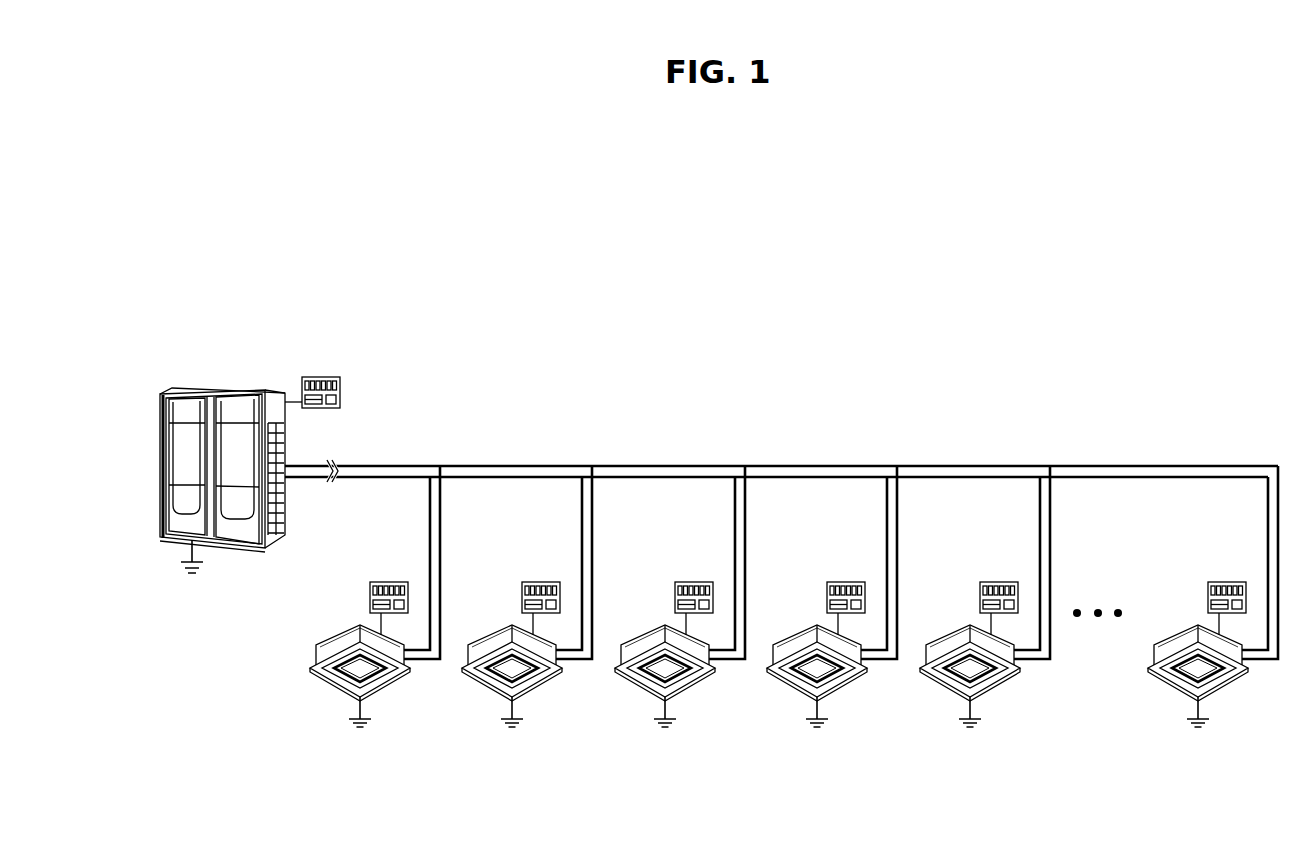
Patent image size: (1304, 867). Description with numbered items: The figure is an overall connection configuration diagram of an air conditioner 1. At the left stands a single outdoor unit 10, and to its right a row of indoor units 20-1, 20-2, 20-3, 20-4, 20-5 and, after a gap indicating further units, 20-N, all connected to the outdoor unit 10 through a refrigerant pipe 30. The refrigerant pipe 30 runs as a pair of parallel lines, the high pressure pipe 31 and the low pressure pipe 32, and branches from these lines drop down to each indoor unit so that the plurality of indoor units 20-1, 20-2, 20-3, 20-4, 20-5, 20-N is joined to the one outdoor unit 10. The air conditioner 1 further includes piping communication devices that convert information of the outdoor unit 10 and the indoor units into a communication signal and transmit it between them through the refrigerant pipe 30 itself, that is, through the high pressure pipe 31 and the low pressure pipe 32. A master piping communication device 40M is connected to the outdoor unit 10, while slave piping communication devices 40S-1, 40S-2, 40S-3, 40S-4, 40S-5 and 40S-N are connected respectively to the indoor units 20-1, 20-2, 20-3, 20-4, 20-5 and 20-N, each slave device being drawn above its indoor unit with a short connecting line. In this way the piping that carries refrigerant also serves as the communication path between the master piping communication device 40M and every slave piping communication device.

The air conditioner 1 is at (670, 304).
The outdoor unit 10 is at (162, 392).
The indoor unit 20-1 is at (342, 632).
The indoor unit 20-2 is at (494, 632).
The indoor unit 20-3 is at (647, 632).
The indoor unit 20-4 is at (799, 632).
The indoor unit 20-5 is at (952, 632).
The indoor unit 20-N is at (1180, 632).
The refrigerant pipe 30 is at (417, 421).
The high pressure pipe 31 is at (361, 465).
The low pressure pipe 32 is at (394, 476).
The master piping communication device 40M is at (321, 376).
The slave piping communication device 40S-1 is at (377, 580).
The slave piping communication device 40S-2 is at (529, 580).
The slave piping communication device 40S-3 is at (682, 580).
The slave piping communication device 40S-4 is at (834, 580).
The slave piping communication device 40S-5 is at (987, 580).
The slave piping communication device 40S-N is at (1215, 580).